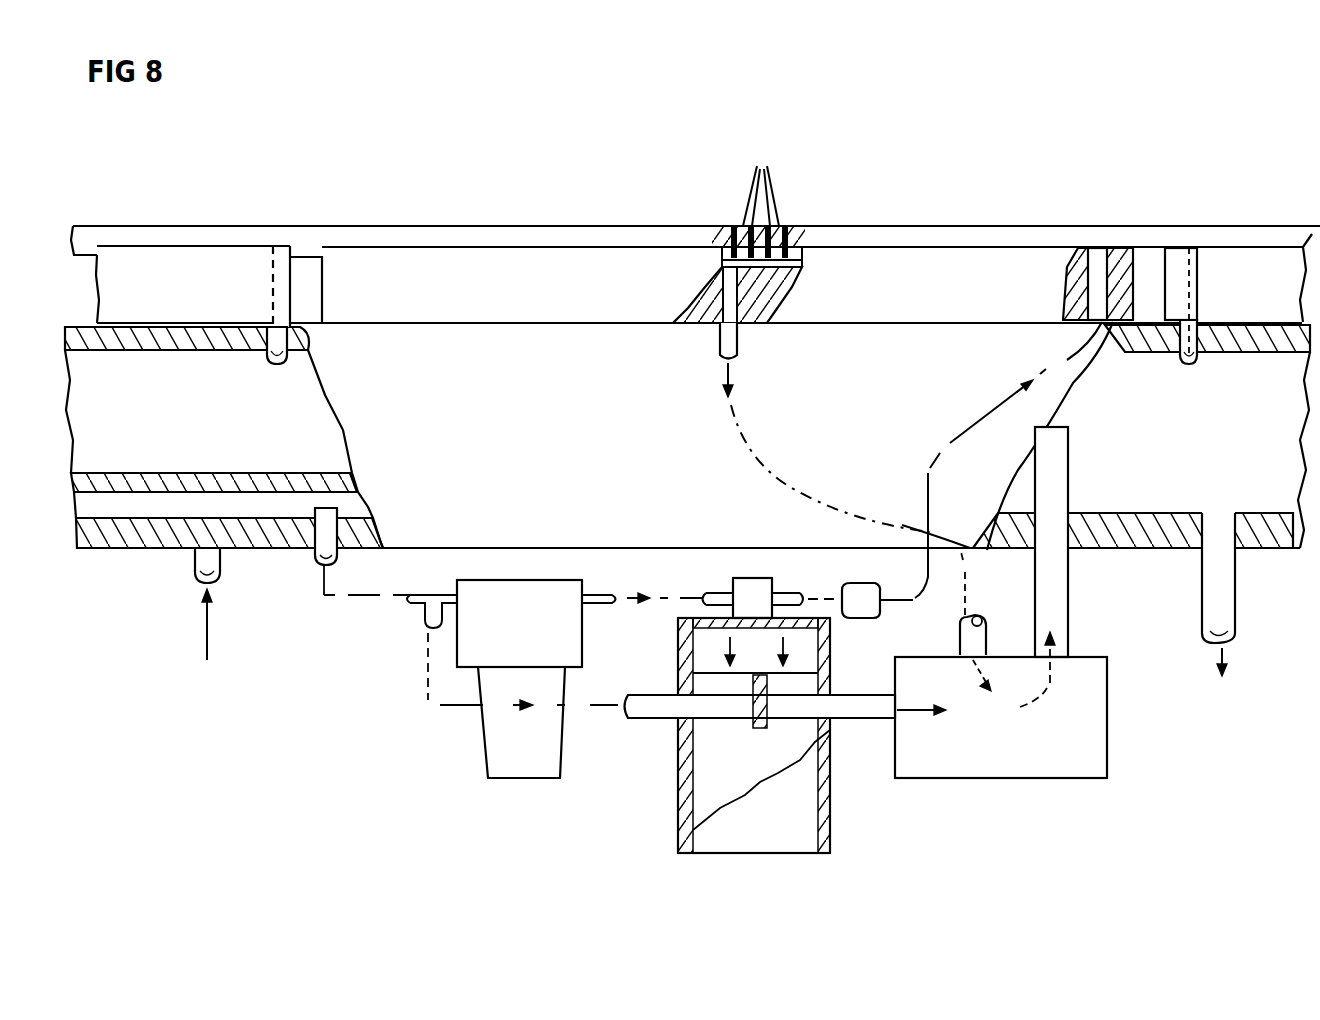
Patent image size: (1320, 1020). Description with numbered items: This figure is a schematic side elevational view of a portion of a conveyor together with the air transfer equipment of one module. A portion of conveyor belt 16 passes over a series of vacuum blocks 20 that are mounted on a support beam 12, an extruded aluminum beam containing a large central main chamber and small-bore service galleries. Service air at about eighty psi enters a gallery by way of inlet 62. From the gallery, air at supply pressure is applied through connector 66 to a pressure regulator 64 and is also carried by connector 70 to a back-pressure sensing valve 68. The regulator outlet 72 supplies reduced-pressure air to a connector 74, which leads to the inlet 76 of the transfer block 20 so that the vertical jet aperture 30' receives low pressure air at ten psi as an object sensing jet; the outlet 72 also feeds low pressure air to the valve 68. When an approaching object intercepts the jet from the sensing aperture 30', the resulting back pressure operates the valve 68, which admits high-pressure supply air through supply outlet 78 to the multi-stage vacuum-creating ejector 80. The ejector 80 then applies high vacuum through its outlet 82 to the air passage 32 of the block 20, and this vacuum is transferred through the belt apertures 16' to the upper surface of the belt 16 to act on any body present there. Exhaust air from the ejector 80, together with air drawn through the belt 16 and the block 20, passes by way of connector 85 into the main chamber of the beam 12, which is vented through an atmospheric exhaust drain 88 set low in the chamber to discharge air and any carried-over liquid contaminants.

The support beam 12 is at (124, 565).
The conveyor belt 16 is at (695, 225).
The belt apertures 16' is at (739, 229).
The vacuum block 20 is at (350, 273).
The vertical jet aperture 30' is at (731, 300).
The air passage 32 is at (742, 327).
The inlet 62 is at (215, 568).
The pressure regulator 64 is at (490, 630).
The connector 66 is at (318, 562).
The back-pressure sensing valve 68 is at (710, 770).
The connector 70 is at (430, 604).
The outlet 72 is at (600, 599).
The connector 74 is at (873, 625).
The inlet 76 is at (1107, 327).
The supply outlet 78 is at (873, 712).
The multi-stage vacuum-creating ejector 80 is at (1013, 743).
The vacuum outlet 82 is at (988, 640).
The connector 85 is at (1070, 563).
The atmospheric exhaust drain 88 is at (1218, 511).